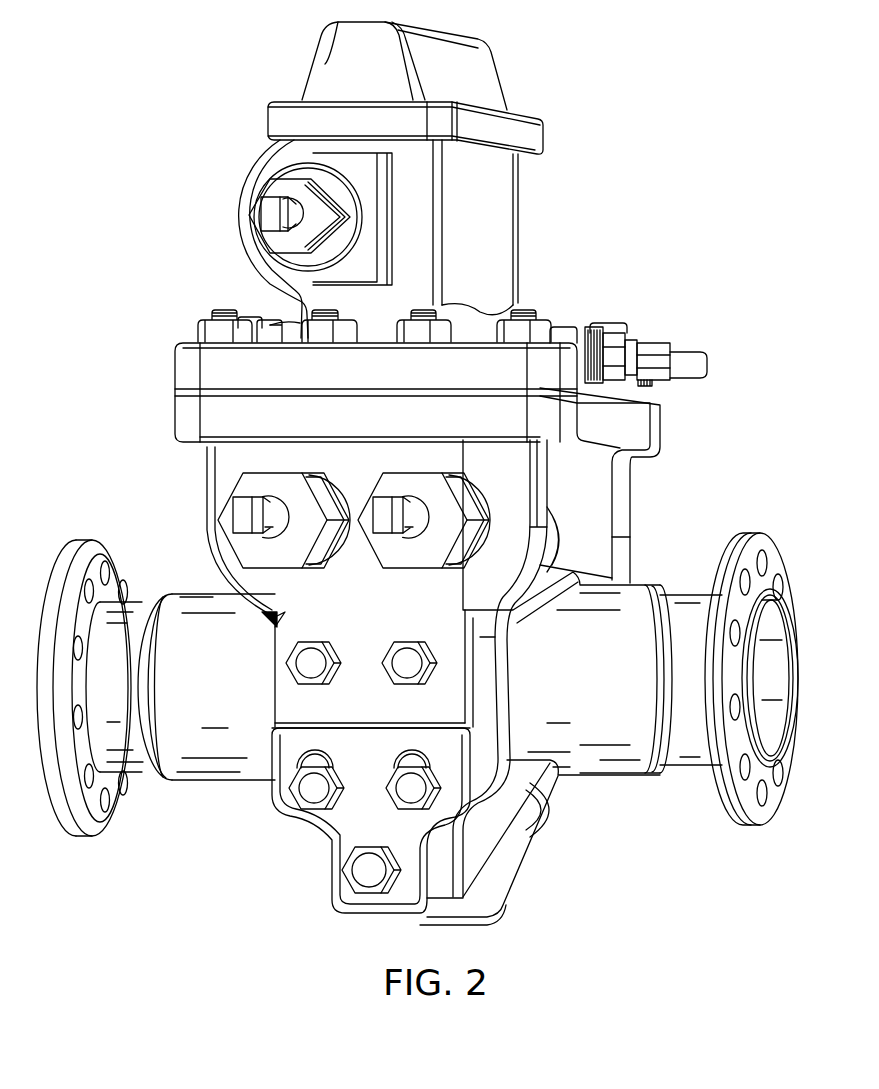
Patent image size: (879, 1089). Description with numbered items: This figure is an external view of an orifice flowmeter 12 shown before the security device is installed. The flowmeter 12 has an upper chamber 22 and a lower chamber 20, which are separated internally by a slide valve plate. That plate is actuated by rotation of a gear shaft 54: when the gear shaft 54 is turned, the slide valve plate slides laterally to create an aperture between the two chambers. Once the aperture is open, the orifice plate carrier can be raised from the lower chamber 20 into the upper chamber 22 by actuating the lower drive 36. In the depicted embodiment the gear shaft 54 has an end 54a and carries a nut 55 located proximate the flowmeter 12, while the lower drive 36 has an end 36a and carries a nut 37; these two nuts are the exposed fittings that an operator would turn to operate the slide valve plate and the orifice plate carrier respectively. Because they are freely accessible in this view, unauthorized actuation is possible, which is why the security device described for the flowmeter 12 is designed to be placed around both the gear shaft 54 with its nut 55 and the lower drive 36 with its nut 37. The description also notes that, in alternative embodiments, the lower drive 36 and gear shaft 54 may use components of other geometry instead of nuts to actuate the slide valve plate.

The flowmeter 12 is at (236, 156).
The lower chamber 20 is at (131, 475).
The upper chamber 22 is at (295, 52).
The lower drive 36 is at (268, 538).
The end of lower drive 36a is at (233, 506).
The nut 37 is at (235, 480).
The gear shaft 54 is at (392, 540).
The end of gear shaft 54a is at (358, 523).
The nut 55 is at (440, 461).